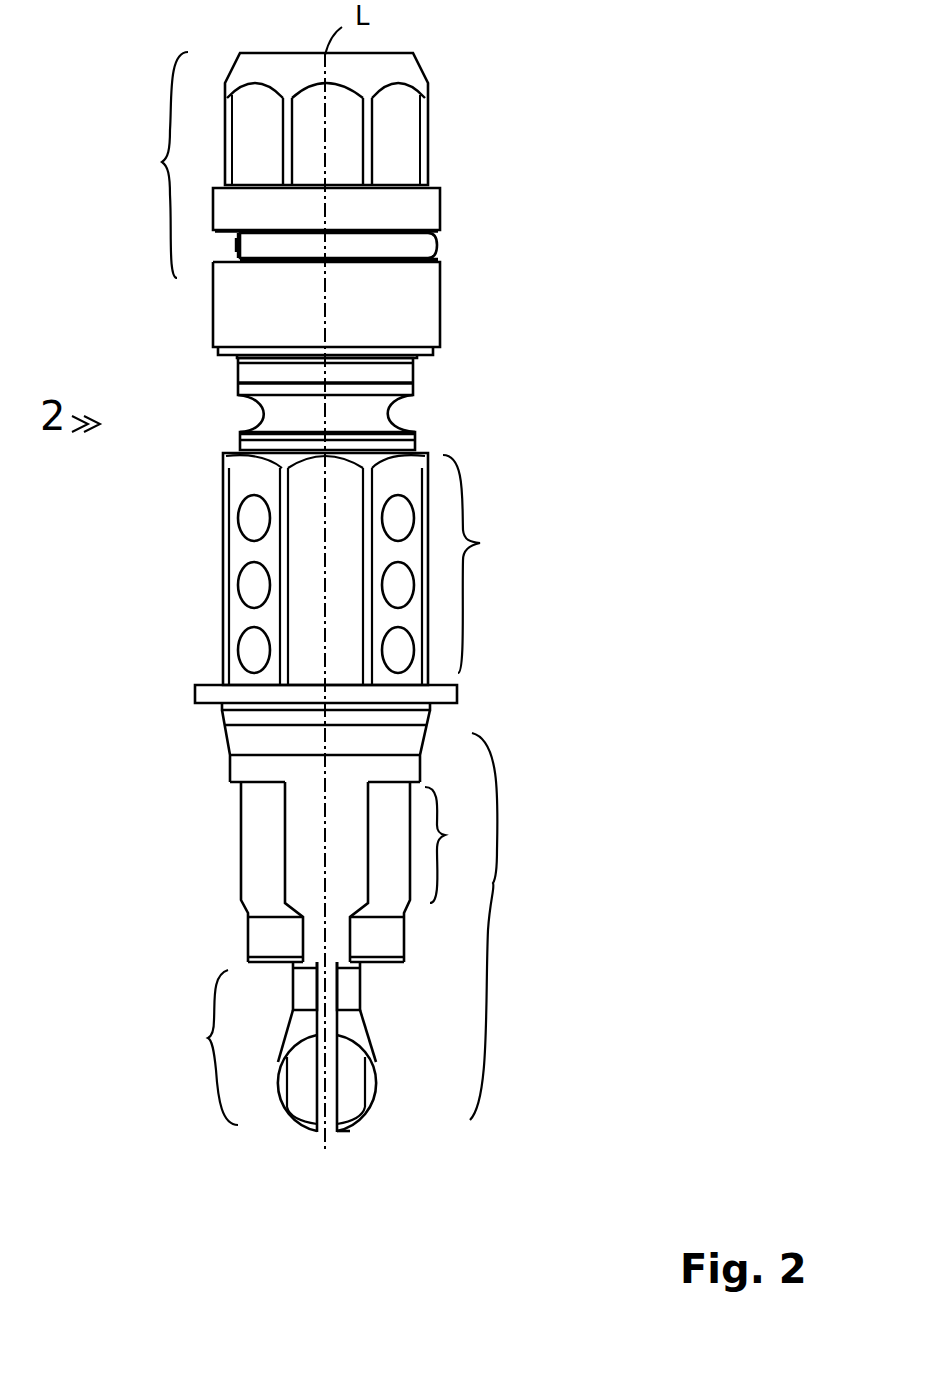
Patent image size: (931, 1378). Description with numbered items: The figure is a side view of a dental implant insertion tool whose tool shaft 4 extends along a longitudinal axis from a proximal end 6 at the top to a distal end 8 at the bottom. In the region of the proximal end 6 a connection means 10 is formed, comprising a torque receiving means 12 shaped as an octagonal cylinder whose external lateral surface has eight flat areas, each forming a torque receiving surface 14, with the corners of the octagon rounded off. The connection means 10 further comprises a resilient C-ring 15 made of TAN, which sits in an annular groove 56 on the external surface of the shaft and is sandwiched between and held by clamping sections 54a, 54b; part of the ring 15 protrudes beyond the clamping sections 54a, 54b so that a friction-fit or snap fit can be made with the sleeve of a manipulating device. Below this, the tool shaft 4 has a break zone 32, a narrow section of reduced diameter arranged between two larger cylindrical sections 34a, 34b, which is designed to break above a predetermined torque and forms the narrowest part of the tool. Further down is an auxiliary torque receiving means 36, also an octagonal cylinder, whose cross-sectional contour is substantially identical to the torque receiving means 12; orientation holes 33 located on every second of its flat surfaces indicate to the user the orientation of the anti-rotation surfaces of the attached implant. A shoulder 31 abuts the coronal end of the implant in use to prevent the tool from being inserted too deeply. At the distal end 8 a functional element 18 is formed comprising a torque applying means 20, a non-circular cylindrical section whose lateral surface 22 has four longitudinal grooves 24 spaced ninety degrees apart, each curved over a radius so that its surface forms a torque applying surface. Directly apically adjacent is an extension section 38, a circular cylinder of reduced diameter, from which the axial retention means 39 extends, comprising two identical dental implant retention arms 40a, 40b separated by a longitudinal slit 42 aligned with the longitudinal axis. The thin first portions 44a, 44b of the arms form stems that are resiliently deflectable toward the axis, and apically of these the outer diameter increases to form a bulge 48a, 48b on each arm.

The tool shaft 4 is at (447, 325).
The proximal end 6 is at (407, 57).
The distal end 8 is at (350, 1132).
The connection means 10 is at (150, 165).
The torque receiving means 12 is at (432, 135).
The torque receiving surface 14 is at (326, 134).
The resilient C-ring 15 is at (445, 240).
The functional element 18 is at (382, 911).
The torque applying means 20 is at (356, 842).
The lateral surface 22 is at (325, 872).
The longitudinal groove 24 is at (328, 872).
The shoulder 31 is at (467, 693).
The break zone 32 is at (398, 412).
The orientation holes 33 is at (252, 520).
The cylindrical section 34a is at (218, 345).
The cylindrical section 34b is at (218, 412).
The auxiliary torque receiving means 36 is at (371, 569).
The extension section 38 is at (410, 930).
The axial retention means 39 is at (198, 1047).
The dental implant retention arm 40a is at (373, 1028).
The dental implant retention arm 40b is at (287, 1040).
The longitudinal slit 42 is at (325, 1123).
The first portion 44a is at (362, 985).
The first portion 44b is at (293, 990).
The bulge 48a is at (376, 1082).
The bulge 48b is at (280, 1082).
The clamping section 54a is at (445, 200).
The clamping section 54b is at (445, 273).
The annular groove 56 is at (217, 222).